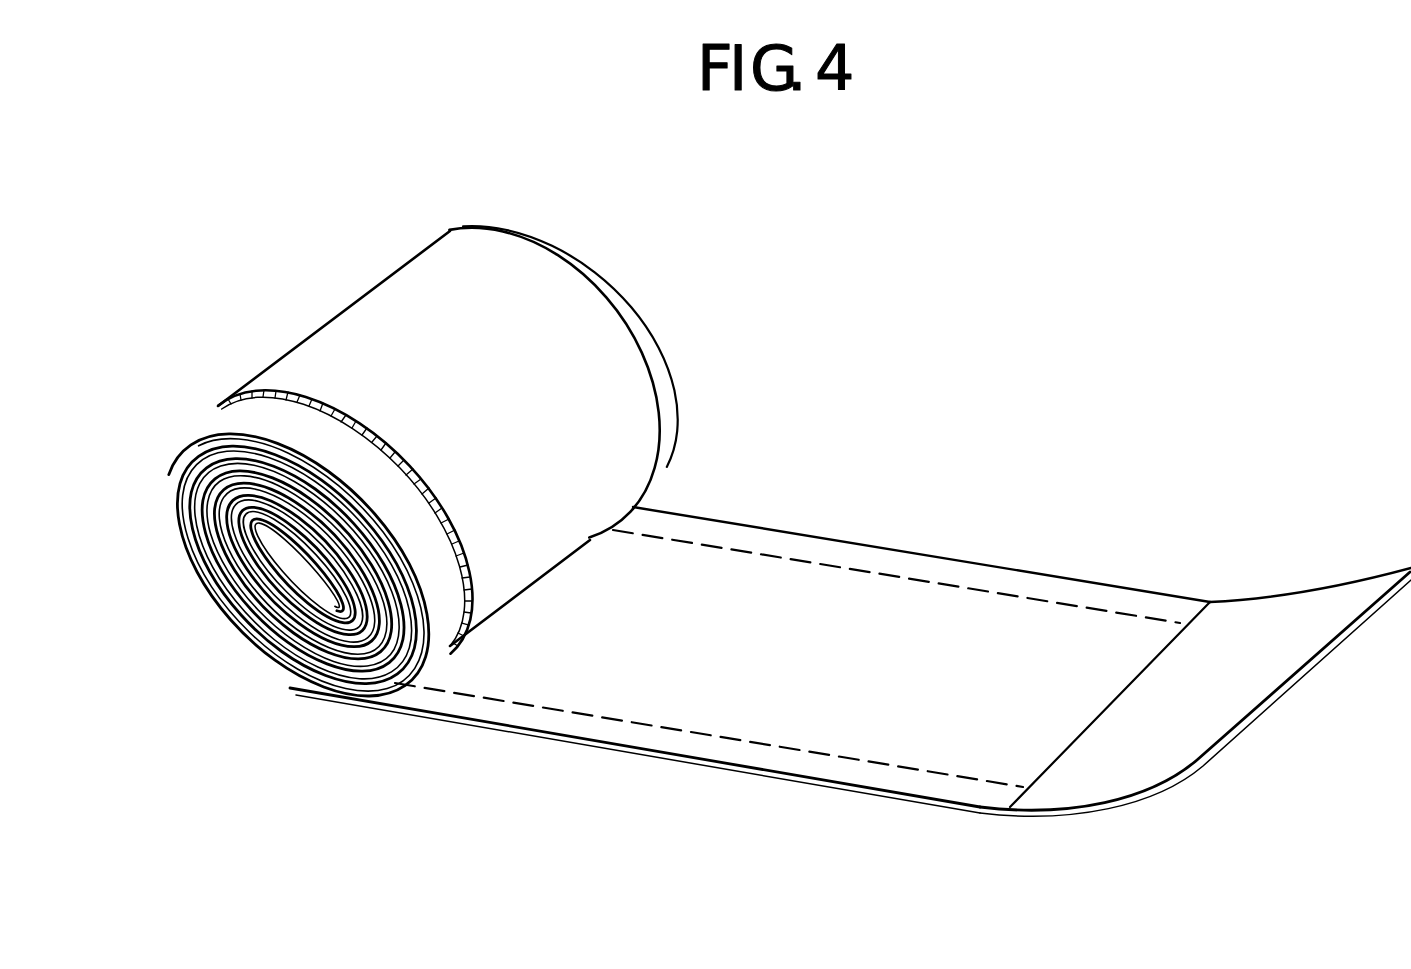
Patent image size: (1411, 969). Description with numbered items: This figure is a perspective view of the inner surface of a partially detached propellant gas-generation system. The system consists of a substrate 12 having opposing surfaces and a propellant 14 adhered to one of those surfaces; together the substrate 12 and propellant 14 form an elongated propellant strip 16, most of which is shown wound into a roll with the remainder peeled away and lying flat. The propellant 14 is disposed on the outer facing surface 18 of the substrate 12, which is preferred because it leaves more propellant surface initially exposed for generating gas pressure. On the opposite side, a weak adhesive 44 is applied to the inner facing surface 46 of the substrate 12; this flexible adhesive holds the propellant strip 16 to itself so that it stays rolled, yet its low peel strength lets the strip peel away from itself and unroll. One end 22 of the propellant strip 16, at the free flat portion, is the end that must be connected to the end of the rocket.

The substrate 12 is at (840, 792).
The propellant 14 is at (585, 334).
The propellant strip 16 is at (101, 506).
The outer facing surface 18 is at (253, 420).
The one end 22 is at (1233, 748).
The weak adhesive 44 is at (942, 617).
The inner facing surface 46 is at (883, 562).